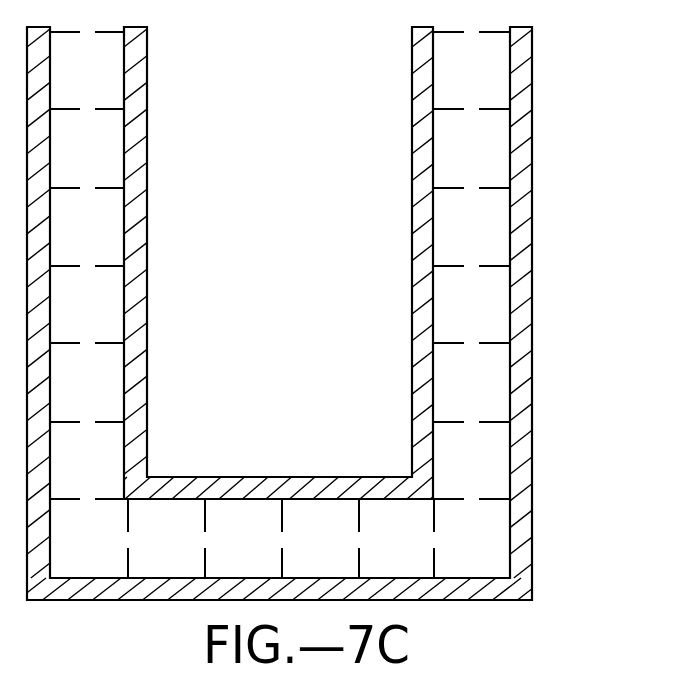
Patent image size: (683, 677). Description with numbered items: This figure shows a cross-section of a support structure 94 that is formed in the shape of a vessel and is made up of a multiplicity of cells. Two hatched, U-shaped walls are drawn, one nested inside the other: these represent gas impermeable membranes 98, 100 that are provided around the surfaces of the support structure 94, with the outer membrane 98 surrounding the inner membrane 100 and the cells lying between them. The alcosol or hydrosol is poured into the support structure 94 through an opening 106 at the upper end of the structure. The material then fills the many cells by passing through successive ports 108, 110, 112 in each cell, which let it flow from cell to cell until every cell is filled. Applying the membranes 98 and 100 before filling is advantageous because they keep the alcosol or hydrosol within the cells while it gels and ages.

The support structure 94 is at (336, 304).
The gas impermeable membrane 98 is at (533, 480).
The gas impermeable membrane 100 is at (412, 372).
The opening 106 is at (492, 32).
The port 108 is at (492, 109).
The port 110 is at (492, 188).
The port 112 is at (492, 266).